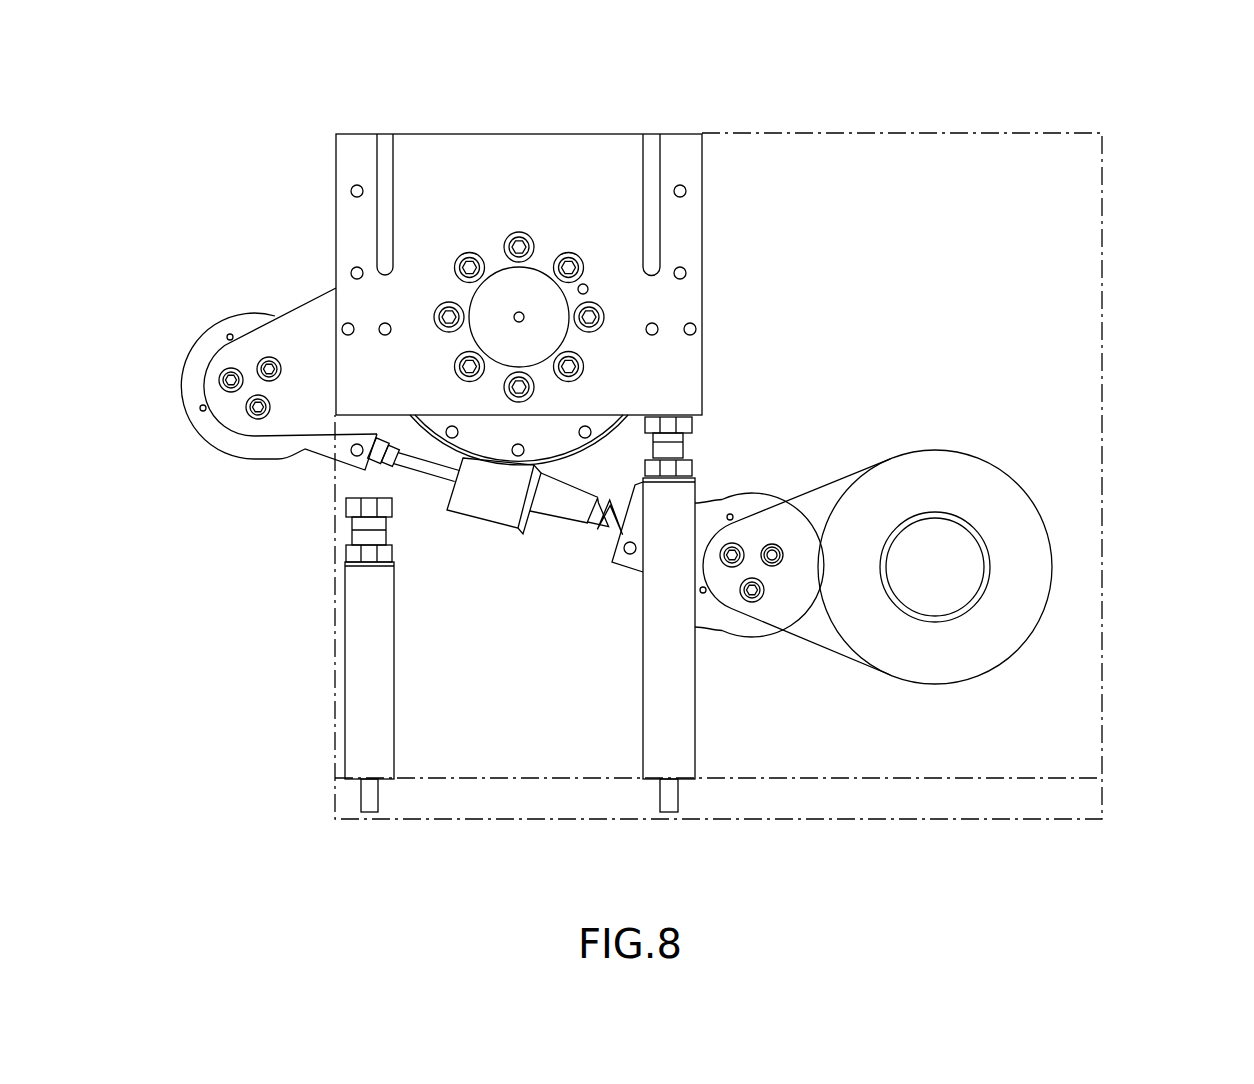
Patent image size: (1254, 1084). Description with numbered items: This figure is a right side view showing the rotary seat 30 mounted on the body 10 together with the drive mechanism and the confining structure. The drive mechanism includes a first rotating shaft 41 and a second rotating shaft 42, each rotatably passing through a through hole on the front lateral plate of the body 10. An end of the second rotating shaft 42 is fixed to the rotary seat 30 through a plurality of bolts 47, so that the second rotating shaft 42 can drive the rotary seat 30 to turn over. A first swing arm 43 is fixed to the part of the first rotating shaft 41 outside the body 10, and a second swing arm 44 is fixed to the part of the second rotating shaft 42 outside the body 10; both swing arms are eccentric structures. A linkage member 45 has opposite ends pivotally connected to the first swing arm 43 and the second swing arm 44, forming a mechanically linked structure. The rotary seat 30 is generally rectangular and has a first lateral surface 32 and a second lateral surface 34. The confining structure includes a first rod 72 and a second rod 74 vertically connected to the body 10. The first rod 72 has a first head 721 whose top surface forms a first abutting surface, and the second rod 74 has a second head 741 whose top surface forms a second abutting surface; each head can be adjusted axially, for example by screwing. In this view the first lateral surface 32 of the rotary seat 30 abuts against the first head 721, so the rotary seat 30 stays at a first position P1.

The body 10 is at (1012, 125).
The rotary seat 30 is at (448, 234).
The second lateral surface 34 is at (336, 202).
The second rotating shaft 42 is at (522, 290).
The bolts 47 is at (517, 236).
The first position P1 is at (714, 160).
The first lateral surface 32 is at (523, 420).
The second swing arm 44 is at (280, 310).
The linkage member 45 is at (487, 523).
The first swing arm 43 is at (850, 478).
The first rotating shaft 41 is at (938, 568).
The second head 741 is at (343, 507).
The second rod 74 is at (375, 710).
The first head 721 is at (677, 424).
The first rod 72 is at (673, 740).